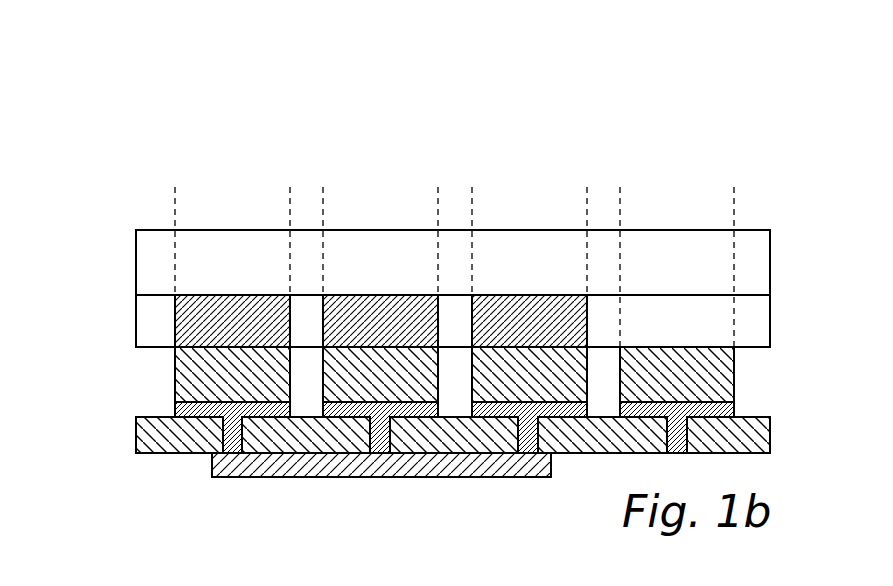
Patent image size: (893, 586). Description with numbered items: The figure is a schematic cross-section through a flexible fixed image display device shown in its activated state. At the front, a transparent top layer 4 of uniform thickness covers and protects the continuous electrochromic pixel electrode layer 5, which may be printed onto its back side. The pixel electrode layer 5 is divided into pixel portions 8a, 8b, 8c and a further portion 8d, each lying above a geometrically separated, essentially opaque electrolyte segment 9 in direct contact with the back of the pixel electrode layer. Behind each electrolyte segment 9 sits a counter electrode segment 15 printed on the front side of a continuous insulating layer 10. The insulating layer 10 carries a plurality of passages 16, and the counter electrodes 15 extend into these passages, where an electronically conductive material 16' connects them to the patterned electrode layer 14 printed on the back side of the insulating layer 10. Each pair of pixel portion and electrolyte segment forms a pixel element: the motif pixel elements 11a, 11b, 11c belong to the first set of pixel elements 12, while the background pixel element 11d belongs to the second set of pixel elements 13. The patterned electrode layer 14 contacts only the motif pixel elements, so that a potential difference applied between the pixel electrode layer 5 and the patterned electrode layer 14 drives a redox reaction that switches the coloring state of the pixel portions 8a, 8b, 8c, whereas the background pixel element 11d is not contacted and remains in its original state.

The transparent top layer 4 is at (148, 263).
The pixel electrode layer 5 is at (148, 327).
The pixel portion 8a is at (208, 312).
The pixel portion 8b is at (367, 320).
The pixel portion 8c is at (510, 313).
The electrode region 8d is at (718, 322).
The electrolyte segment 9 is at (188, 370).
The insulating layer 10 is at (142, 440).
The motif pixel element 11a is at (290, 172).
The motif pixel element 11b is at (438, 172).
The motif pixel element 11c is at (587, 172).
The background pixel element 11d is at (734, 172).
The first set of pixel elements 12 is at (587, 62).
The second set of pixel elements 13 is at (734, 97).
The patterned electrode layer 14 is at (222, 468).
The counter electrode segment 15 is at (190, 410).
The passage 16 is at (312, 463).
The electronically conductive material 16' is at (280, 486).